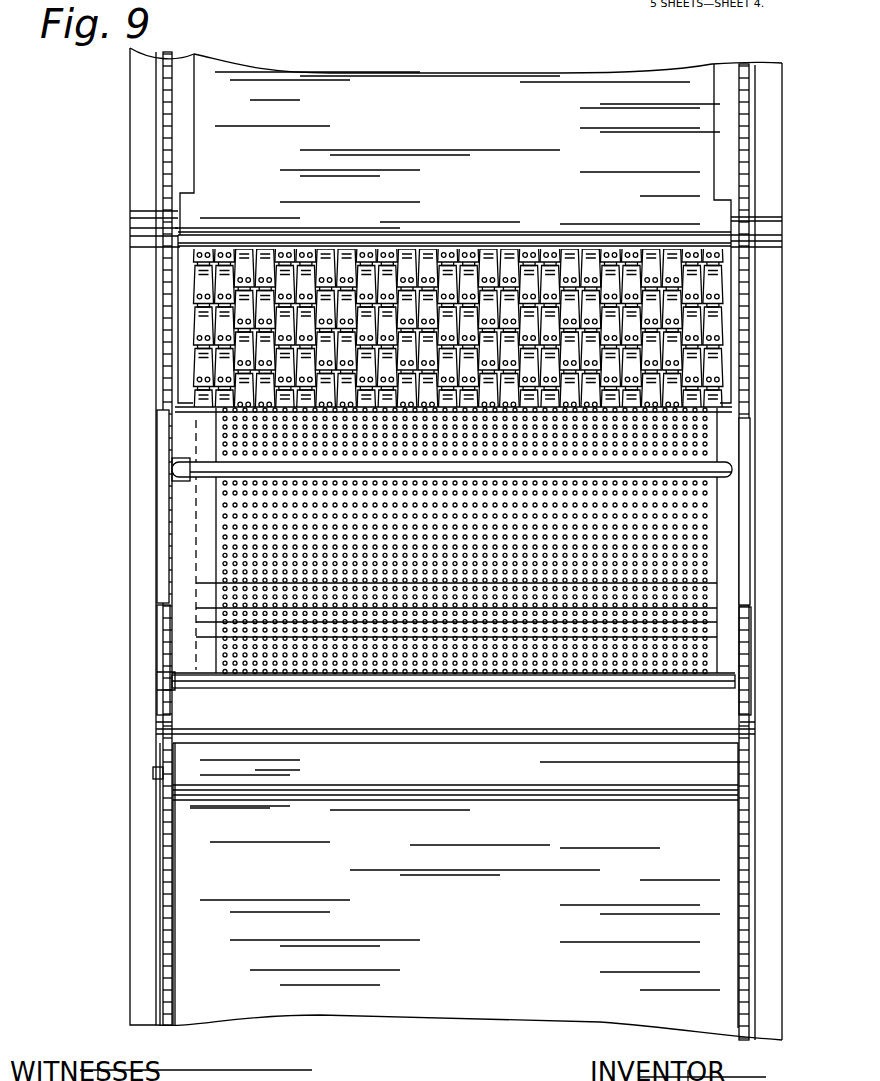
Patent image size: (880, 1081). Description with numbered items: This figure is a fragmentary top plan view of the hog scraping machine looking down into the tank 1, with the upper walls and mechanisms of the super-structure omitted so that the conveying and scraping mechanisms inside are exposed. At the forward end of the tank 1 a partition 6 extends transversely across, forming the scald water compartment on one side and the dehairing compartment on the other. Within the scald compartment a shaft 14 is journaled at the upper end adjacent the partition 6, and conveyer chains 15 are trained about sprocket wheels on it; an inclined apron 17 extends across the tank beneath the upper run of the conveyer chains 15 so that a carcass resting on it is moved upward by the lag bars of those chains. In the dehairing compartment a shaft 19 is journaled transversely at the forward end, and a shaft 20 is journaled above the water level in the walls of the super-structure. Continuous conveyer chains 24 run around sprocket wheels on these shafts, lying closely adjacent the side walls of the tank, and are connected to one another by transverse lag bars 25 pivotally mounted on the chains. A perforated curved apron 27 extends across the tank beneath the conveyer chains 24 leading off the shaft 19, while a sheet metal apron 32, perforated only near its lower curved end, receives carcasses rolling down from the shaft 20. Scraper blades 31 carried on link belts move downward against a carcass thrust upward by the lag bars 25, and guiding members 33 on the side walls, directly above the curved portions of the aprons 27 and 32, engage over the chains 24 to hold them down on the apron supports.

The tank 1 is at (137, 736).
The partition 6 is at (455, 719).
The shaft 14 is at (158, 778).
The conveyer chains 15 is at (168, 935).
The inclined apron 17 is at (456, 885).
The shaft 19 is at (281, 678).
The shaft 20 is at (172, 220).
The conveyer chains 24 is at (160, 628).
The lag bars 25 is at (190, 478).
The perforated curved apron 27 is at (207, 553).
The scraper blades 31 is at (202, 363).
The sheet metal apron 32 is at (447, 150).
The guiding members 33 is at (158, 450).